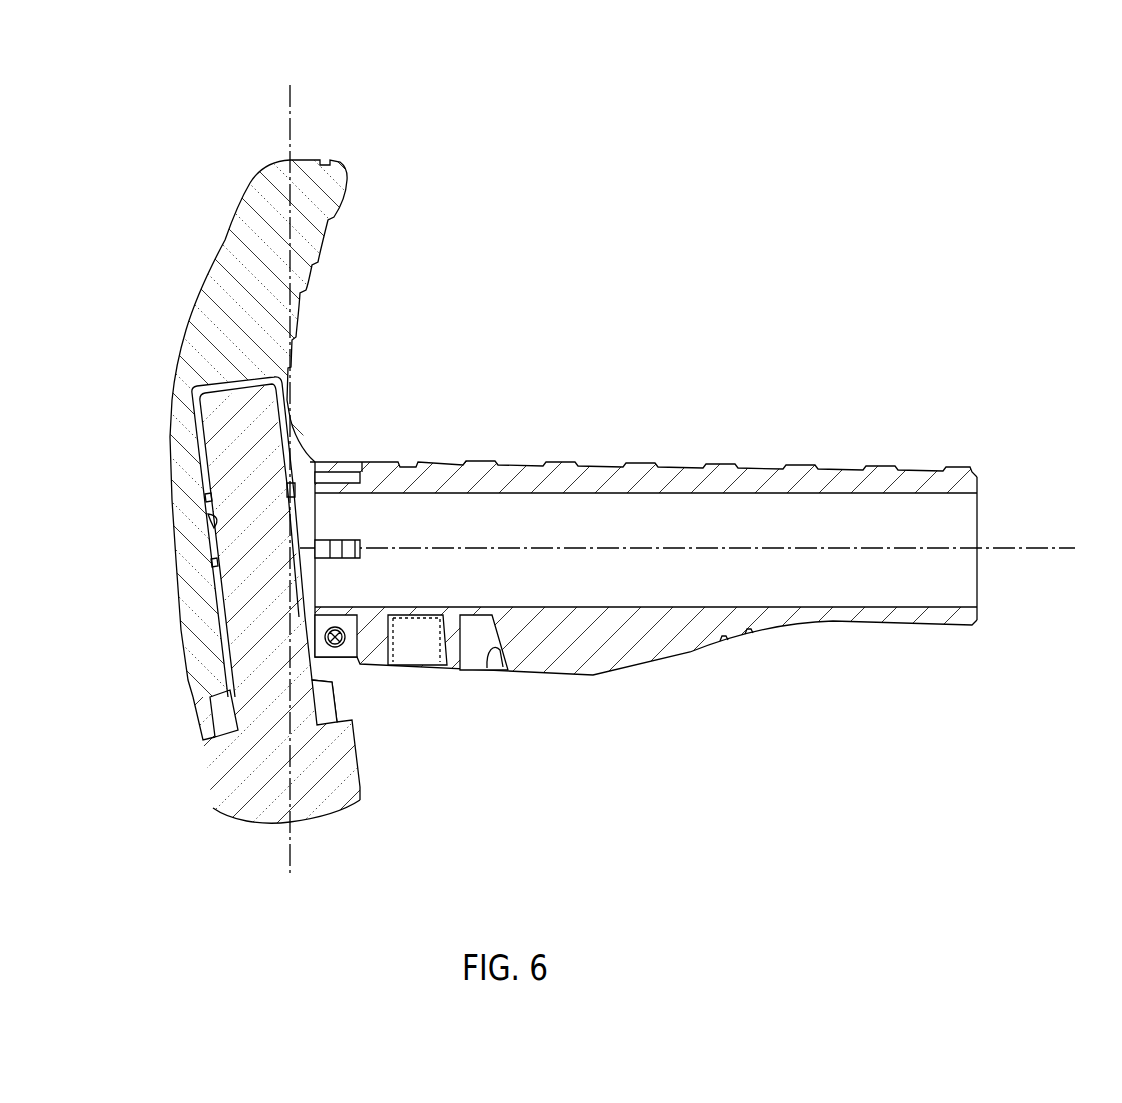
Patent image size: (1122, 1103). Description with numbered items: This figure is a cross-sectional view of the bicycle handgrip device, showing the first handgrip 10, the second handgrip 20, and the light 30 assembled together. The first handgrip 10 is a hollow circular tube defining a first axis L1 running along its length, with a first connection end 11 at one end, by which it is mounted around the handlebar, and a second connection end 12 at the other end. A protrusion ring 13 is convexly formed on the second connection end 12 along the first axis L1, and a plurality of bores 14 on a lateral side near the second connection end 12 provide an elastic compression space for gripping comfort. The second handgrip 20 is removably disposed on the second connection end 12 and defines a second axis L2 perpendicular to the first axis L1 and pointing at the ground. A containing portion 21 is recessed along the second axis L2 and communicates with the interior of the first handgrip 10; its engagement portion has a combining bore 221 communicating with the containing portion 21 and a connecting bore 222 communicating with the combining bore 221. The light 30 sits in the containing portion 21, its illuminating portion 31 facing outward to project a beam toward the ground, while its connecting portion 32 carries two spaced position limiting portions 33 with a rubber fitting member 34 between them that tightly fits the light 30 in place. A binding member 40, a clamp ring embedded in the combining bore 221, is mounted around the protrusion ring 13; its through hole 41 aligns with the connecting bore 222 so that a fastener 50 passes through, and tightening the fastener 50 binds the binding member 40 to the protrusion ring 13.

The first handgrip 10 is at (552, 567).
The first connection end 11 is at (977, 587).
The second connection end 12 is at (328, 474).
The protrusion ring 13 is at (345, 612).
The bores 14 is at (487, 650).
The second handgrip 20 is at (188, 325).
The containing portion 21 is at (219, 520).
The combining bore 221 is at (360, 498).
The connecting bore 222 is at (203, 627).
The light 30 is at (276, 644).
The illuminating portion 31 is at (265, 810).
The connecting portion 32 is at (201, 537).
The position limiting portions 33 is at (207, 498).
The fitting member 34 is at (214, 563).
The binding member 40 is at (314, 518).
The through hole 41 is at (328, 637).
The fastener 50 is at (362, 657).
The first axis L1 is at (1025, 548).
The second axis L2 is at (292, 130).